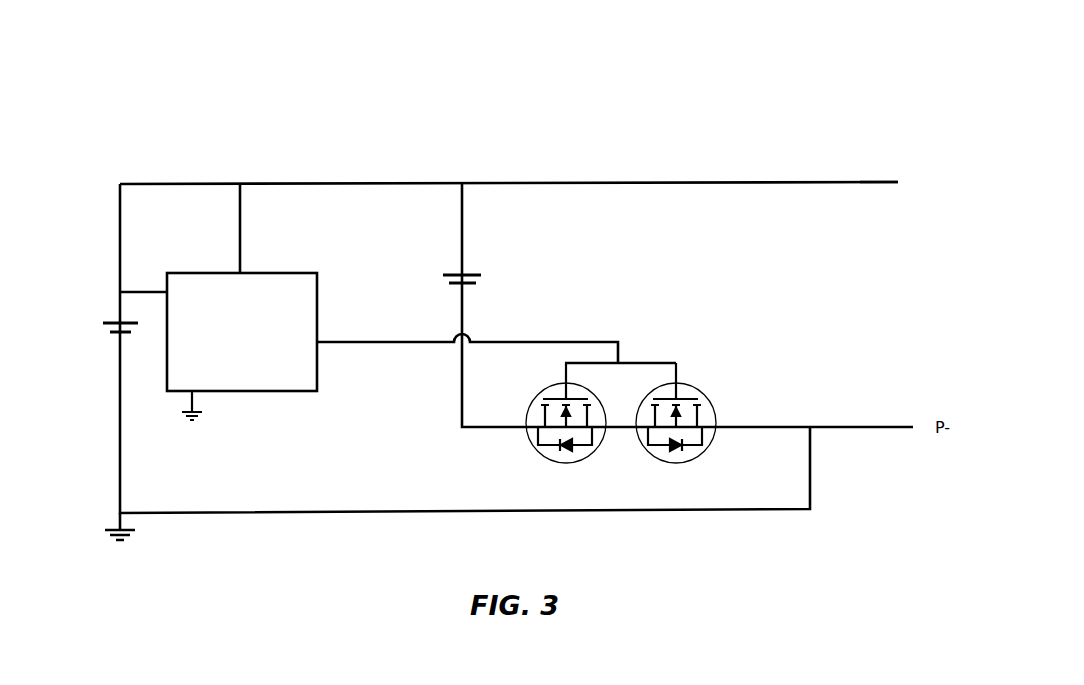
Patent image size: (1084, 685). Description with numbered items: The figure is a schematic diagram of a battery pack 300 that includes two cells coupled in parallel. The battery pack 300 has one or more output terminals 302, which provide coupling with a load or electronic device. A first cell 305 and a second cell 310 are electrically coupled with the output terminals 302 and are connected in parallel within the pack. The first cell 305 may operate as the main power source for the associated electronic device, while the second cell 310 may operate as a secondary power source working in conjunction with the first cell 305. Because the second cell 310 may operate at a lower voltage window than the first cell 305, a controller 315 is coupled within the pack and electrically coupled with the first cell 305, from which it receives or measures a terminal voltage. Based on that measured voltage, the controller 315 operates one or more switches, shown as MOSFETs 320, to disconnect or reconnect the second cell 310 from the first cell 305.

The battery pack 300 is at (133, 139).
The output terminals 302 is at (896, 180).
The first cell 305 is at (115, 335).
The second cell 310 is at (481, 272).
The controller 315 is at (280, 392).
The MOSFETs 320 is at (700, 382).